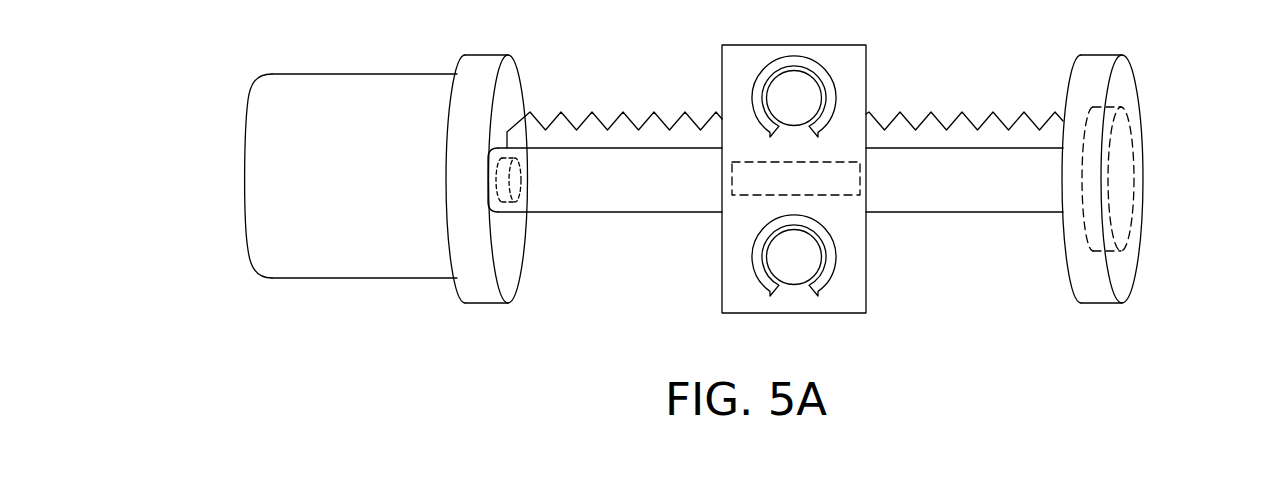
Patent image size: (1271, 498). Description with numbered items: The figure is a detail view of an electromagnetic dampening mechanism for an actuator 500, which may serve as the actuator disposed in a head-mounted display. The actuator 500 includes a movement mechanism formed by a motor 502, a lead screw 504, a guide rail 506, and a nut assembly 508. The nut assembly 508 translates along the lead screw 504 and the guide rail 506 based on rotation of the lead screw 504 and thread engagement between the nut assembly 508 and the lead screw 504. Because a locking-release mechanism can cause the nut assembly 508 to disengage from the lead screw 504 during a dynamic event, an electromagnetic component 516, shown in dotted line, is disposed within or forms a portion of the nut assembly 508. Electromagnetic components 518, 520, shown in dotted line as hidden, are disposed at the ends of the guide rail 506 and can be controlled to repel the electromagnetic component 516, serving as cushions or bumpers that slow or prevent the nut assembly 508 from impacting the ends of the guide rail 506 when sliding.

The actuator 500 is at (169, 79).
The motor 502 is at (310, 73).
The lead screw 504 is at (932, 113).
The guide rail 506 is at (923, 212).
The nut assembly 508 is at (838, 45).
The electromagnetic component 516 is at (733, 196).
The electromagnetic component 518 is at (518, 180).
The electromagnetic component 520 is at (1132, 202).